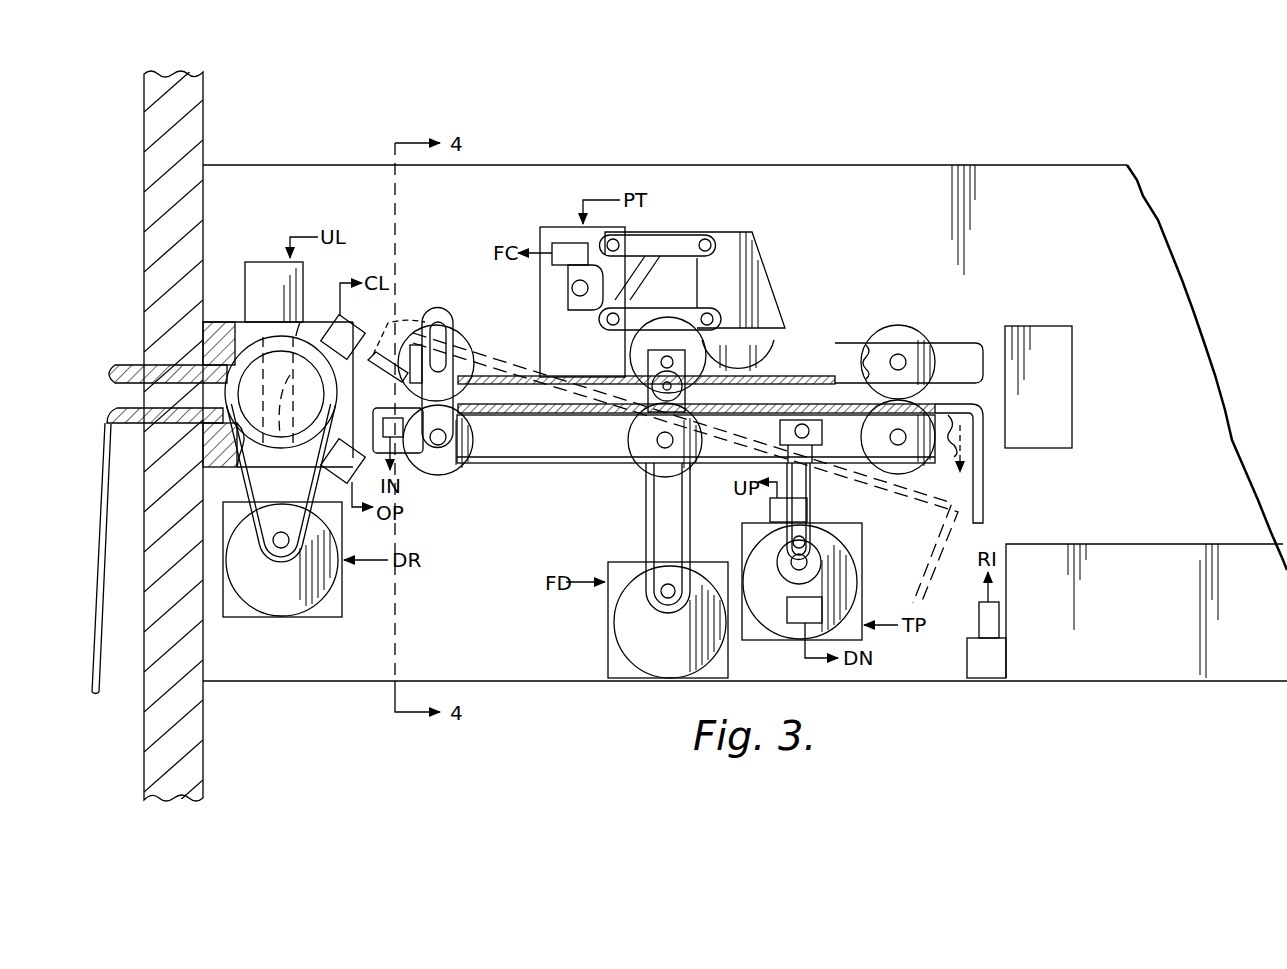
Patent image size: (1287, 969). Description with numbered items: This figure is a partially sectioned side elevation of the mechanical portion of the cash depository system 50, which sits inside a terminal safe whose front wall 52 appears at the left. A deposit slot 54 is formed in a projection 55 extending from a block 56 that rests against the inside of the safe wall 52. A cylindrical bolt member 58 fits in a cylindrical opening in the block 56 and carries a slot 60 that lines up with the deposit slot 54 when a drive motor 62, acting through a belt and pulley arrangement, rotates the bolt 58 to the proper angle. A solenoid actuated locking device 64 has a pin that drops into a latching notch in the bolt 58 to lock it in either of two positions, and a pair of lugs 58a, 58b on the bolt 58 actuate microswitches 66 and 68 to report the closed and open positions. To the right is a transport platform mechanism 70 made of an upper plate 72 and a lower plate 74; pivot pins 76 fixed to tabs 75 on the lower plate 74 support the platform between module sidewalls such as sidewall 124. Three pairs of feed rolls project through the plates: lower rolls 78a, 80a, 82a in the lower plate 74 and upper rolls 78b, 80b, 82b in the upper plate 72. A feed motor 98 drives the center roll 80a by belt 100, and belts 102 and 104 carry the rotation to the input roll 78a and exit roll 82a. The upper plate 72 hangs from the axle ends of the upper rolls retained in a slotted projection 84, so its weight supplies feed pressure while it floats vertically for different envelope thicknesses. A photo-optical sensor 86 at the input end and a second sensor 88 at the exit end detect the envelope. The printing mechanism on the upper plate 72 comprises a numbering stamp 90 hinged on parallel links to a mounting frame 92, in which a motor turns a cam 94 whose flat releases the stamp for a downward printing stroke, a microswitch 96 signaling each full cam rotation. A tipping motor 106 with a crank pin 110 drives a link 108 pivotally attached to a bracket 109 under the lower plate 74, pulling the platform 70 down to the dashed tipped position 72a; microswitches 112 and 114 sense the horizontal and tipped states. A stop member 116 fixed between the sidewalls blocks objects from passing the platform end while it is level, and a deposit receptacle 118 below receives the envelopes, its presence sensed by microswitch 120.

The apparatus 50 is at (142, 297).
The front wall of the safe 52 is at (203, 132).
The deposit slot 54 is at (131, 378).
The projection 55 is at (136, 428).
The block 56 is at (218, 322).
The cylindrical bolt member 58 is at (232, 389).
The lug 58a is at (240, 440).
The lug 58b is at (300, 335).
The slot 60 is at (283, 449).
The drive motor 62 is at (342, 605).
The solenoid actuated locking device 64 is at (258, 262).
The microswitch 66 is at (353, 346).
The microswitch 68 is at (353, 470).
The transport platform mechanism 70 is at (863, 320).
The upper plate 72 is at (797, 376).
The tilted position 72a is at (926, 600).
The lower plate 74 is at (530, 408).
The projections or tabs 75 is at (660, 413).
The pivot pin 76 is at (683, 388).
The feed roll 78a is at (458, 462).
The upper roll 78b is at (463, 335).
The center feed roll 80a is at (650, 460).
The upper roll 80b is at (660, 333).
The exit feed roll 82a is at (870, 437).
The upper roll 82b is at (920, 333).
The slotted projection 84 is at (433, 308).
The photo-optical sensor 86 is at (394, 415).
The photo-optical sensor 88 is at (968, 410).
The numbering stamp 90 is at (770, 262).
The mounting frame 92 is at (587, 351).
The cam 94 is at (568, 290).
The microswitch 96 is at (580, 264).
The feed motor 98 is at (607, 620).
The O-ring belt 100 is at (648, 527).
The O-ring belt 102 is at (530, 463).
The O-ring belt 104 is at (732, 466).
The tipping motor 106 is at (772, 640).
The link 108 is at (812, 503).
The bracket 109 is at (778, 430).
The crank pin 110 is at (806, 541).
The microswitch 112 is at (803, 520).
The microswitch 114 is at (819, 621).
The stop member 116 is at (1043, 326).
The deposit receptacle 118 is at (1135, 544).
The microswitch 120 is at (1000, 631).
The sidewall 124 is at (985, 164).